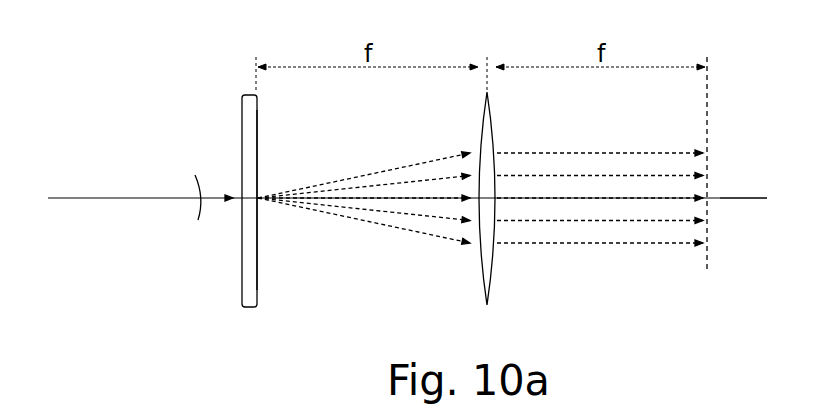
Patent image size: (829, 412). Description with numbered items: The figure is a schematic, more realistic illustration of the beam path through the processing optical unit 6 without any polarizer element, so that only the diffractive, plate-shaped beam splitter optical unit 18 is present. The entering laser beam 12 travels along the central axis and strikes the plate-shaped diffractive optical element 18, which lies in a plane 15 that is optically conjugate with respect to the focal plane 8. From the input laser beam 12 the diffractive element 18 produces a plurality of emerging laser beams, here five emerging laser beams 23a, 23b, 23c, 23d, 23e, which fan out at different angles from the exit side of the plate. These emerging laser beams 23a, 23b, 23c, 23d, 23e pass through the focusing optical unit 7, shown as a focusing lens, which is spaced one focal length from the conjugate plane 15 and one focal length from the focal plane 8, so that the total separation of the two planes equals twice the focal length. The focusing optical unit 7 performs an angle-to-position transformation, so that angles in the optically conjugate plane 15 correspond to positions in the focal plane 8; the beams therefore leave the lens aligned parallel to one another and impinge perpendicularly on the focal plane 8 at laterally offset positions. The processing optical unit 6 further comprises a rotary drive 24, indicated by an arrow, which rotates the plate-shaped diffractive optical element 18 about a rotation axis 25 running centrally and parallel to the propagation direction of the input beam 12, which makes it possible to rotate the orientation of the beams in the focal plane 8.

The processing optical unit 6 is at (205, 90).
The focusing optical unit 7 is at (497, 128).
The focal plane 8 is at (708, 130).
The laser beam 12 is at (58, 198).
The optically conjugate plane 15 is at (253, 87).
The diffractive plate-shaped beam splitter optical unit 18 is at (258, 128).
The emerging laser beam 23a is at (437, 160).
The emerging laser beam 23b is at (385, 186).
The emerging laser beam 23c is at (342, 197).
The emerging laser beam 23d is at (382, 211).
The emerging laser beam 23e is at (436, 232).
The rotary drive 24 is at (177, 179).
The rotation axis 25 is at (752, 198).